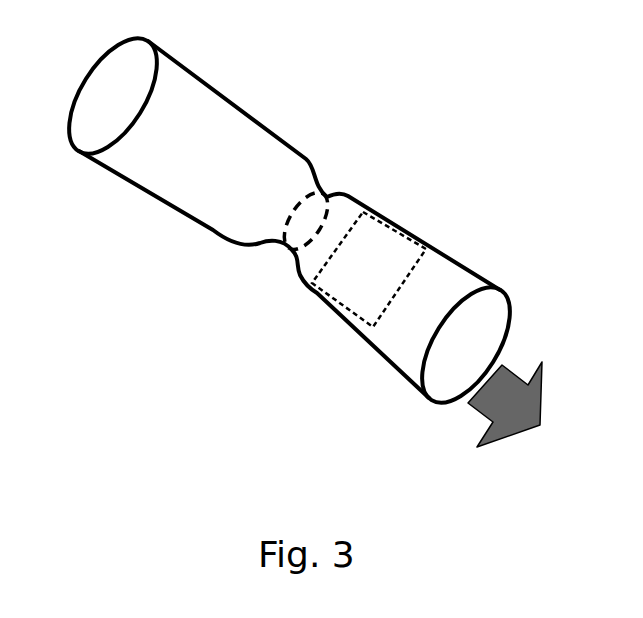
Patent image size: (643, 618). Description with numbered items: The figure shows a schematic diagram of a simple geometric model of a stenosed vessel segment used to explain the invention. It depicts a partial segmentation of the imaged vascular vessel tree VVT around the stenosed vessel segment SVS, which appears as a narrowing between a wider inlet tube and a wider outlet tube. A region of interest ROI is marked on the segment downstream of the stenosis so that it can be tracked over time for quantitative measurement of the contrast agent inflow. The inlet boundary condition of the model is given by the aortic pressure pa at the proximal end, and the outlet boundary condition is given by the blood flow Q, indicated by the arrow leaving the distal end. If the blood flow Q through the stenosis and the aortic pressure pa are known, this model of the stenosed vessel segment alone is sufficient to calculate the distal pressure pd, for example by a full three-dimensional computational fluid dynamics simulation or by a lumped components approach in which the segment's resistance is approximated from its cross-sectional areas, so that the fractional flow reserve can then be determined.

The vascular vessel tree VVT is at (309, 224).
The aortic pressure pa is at (102, 96).
The distal pressure pd is at (455, 350).
The stenosed vessel segment SVS is at (327, 198).
The region of interest ROI is at (427, 250).
The blood flow Q is at (505, 418).